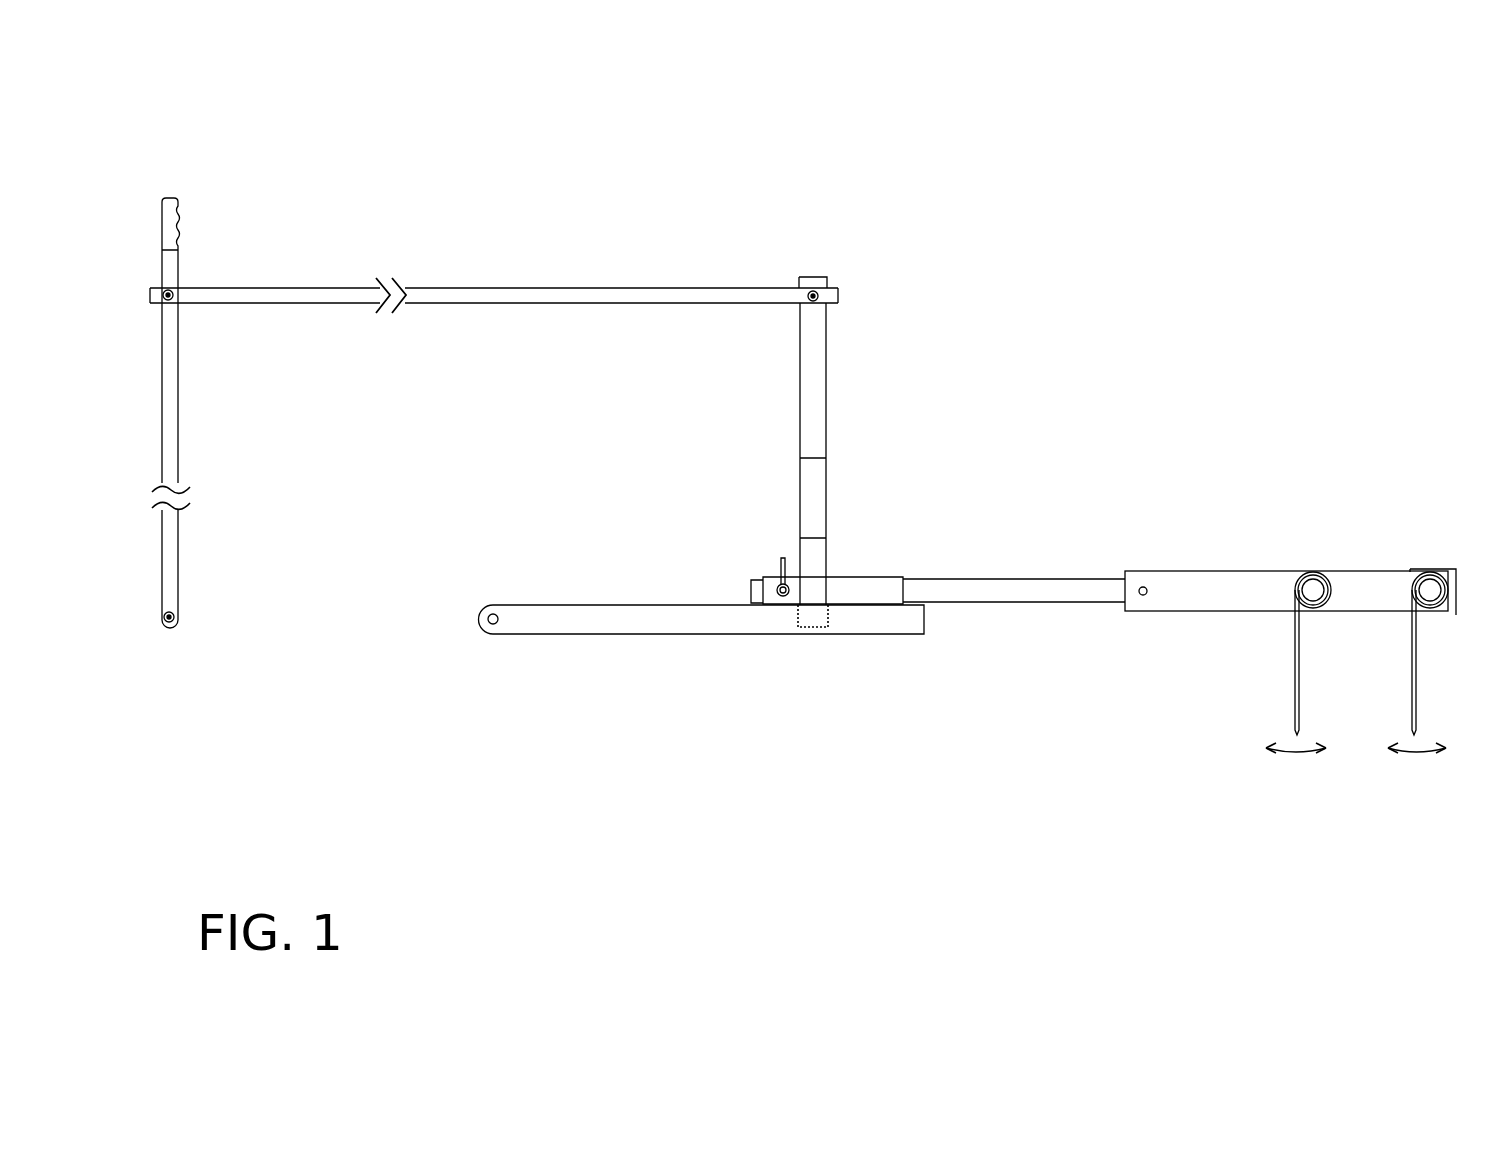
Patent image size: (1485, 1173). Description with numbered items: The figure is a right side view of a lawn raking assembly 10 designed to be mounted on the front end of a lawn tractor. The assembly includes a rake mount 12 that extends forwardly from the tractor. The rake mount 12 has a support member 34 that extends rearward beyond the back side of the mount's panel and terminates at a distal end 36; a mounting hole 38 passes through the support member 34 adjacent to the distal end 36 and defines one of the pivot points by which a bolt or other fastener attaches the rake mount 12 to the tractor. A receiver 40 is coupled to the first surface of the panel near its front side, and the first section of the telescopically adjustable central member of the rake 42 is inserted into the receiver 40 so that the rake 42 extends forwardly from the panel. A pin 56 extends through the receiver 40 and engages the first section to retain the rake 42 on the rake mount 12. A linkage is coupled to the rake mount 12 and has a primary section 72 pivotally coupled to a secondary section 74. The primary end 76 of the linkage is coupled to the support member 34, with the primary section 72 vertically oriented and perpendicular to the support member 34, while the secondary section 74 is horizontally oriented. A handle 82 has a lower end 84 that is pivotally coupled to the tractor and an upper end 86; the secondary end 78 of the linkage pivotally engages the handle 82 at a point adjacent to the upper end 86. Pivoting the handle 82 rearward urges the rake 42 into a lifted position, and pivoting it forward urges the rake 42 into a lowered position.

The lawn raking assembly 10 is at (1028, 255).
The rake mount 12 is at (799, 668).
The support member 34 is at (677, 623).
The distal end 36 is at (478, 614).
The mounting hole 38 is at (504, 636).
The receiver 40 is at (858, 577).
The rake 42 is at (1178, 548).
The pin 56 is at (780, 584).
The primary section 72 is at (827, 415).
The secondary section 74 is at (673, 289).
The primary end 76 is at (815, 630).
The secondary end 78 is at (150, 293).
The handle 82 is at (162, 398).
The lower end 84 is at (170, 640).
The upper end 86 is at (170, 198).